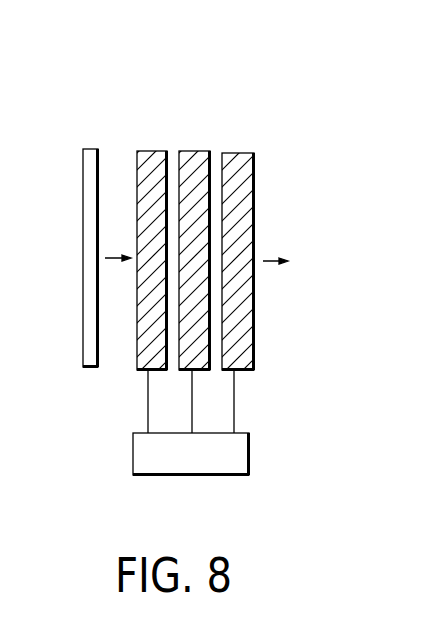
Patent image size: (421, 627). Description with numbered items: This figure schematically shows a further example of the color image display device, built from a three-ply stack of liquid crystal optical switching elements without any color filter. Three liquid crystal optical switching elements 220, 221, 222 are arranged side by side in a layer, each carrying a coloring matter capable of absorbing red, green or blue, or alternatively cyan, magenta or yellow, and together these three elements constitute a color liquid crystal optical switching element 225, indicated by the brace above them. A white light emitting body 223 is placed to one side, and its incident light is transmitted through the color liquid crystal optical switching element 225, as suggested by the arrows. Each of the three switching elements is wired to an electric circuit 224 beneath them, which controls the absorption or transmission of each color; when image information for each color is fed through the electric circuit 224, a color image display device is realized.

The liquid crystal optical switching element 220 is at (152, 151).
The liquid crystal optical switching element 221 is at (193, 151).
The liquid crystal optical switching element 222 is at (245, 153).
The white light emitting body 223 is at (83, 247).
The electric circuit 224 is at (250, 460).
The color liquid crystal optical switching element 225 is at (313, 73).